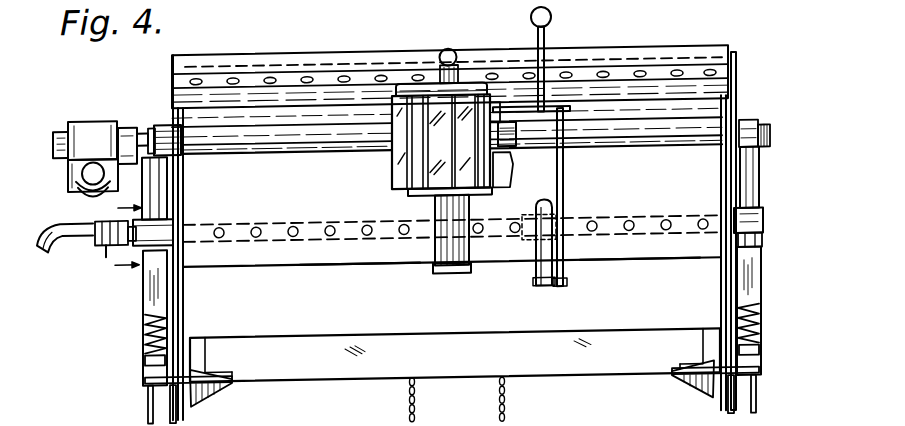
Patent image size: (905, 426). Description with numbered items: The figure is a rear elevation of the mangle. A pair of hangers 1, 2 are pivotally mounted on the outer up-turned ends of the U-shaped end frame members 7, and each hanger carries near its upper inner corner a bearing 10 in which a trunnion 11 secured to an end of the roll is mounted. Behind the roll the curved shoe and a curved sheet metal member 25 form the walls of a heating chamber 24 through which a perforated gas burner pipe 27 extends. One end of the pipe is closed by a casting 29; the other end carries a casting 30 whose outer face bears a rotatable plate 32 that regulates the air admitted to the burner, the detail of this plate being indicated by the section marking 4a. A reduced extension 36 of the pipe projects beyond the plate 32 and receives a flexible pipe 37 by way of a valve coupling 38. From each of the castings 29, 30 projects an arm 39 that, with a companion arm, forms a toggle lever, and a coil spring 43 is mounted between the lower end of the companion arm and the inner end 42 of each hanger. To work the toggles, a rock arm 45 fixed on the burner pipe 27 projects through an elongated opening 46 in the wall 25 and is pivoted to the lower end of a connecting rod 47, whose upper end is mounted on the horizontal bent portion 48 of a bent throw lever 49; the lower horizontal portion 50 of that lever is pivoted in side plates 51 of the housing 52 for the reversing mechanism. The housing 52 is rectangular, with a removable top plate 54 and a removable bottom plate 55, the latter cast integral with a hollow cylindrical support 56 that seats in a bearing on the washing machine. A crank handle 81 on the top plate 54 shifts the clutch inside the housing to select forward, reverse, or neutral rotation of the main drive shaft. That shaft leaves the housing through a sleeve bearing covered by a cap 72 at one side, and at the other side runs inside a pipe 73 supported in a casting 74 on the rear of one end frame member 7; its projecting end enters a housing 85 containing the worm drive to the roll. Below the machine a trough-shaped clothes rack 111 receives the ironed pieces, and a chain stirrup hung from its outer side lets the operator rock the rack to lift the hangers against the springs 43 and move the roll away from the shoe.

The hanger 1 is at (752, 184).
The hanger 2 is at (152, 183).
The section line 4a is at (126, 240).
The end frame member 7 is at (178, 320).
The bearing 10 is at (150, 127).
The trunnion 11 is at (738, 125).
The heating chamber 24 is at (640, 210).
The curved sheet metal member 25 is at (450, 156).
The gas burner pipe 27 is at (343, 244).
The casting 29 is at (757, 219).
The casting 30 is at (160, 210).
The plate 32 is at (130, 234).
The reduced extension 36 is at (126, 230).
The flexible pipe 37 is at (55, 243).
The valve coupling 38 is at (100, 239).
The arm 39 is at (758, 249).
The inner end of hanger 42 is at (148, 364).
The coil spring 43 is at (146, 335).
The rock arm 45 is at (545, 239).
The elongated opening 46 is at (543, 209).
The connecting rod 47 is at (565, 159).
The horizontal bent portion 48 is at (572, 116).
The bent throw lever 49 is at (548, 40).
The horizontal portion 50 is at (518, 112).
The side plate 51 is at (410, 157).
The housing 52 is at (428, 174).
The top plate 54 is at (415, 99).
The bottom plate 55 is at (417, 198).
The hollow cylindrical support 56 is at (452, 272).
The cap 72 is at (517, 146).
The pipe 73 is at (258, 150).
The casting 74 is at (165, 130).
The crank handle 81 is at (443, 72).
The housing 85 is at (90, 123).
The clothes rack 111 is at (557, 380).